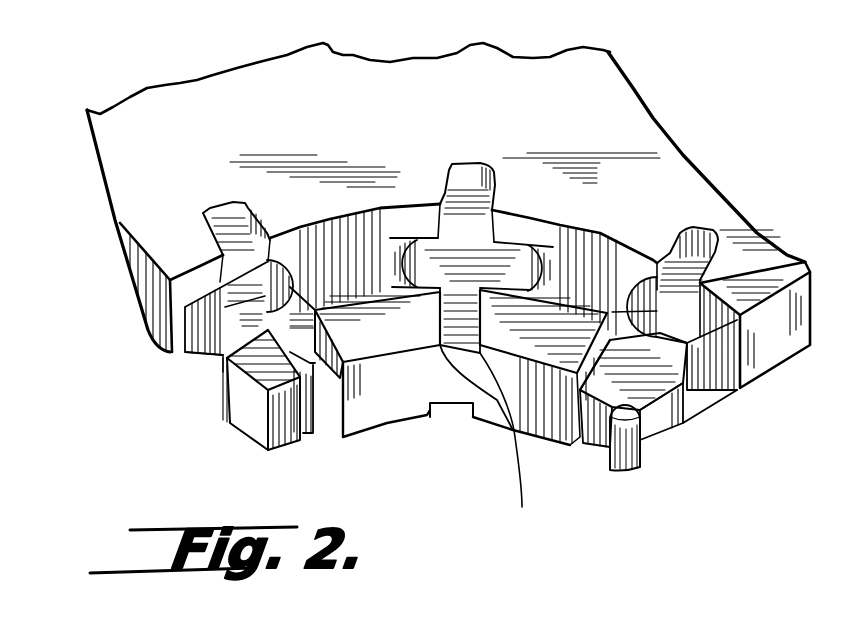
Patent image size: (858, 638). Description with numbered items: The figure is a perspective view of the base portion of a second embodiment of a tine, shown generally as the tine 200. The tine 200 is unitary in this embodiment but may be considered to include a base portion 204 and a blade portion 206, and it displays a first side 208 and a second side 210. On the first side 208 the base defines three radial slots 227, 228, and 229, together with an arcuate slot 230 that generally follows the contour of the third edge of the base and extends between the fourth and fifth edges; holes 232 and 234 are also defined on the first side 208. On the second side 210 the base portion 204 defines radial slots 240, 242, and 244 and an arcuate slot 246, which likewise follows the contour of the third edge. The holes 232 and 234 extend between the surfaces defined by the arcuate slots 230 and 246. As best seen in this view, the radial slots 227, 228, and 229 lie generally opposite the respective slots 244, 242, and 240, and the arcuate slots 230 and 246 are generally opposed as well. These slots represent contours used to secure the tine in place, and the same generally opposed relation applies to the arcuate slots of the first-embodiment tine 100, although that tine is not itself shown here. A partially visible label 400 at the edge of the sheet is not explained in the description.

The tine 200 is at (742, 203).
The base portion 204 is at (537, 446).
The blade portion 206 is at (660, 110).
The first side 208 is at (407, 421).
The second side 210 is at (405, 143).
The radial slot 227 is at (610, 390).
The radial slot 228 is at (475, 350).
The radial slot 229 is at (327, 377).
The arcuate slot 230 is at (688, 343).
The hole 232 is at (717, 347).
The hole 234 is at (245, 292).
The radial slot 240 is at (303, 433).
The radial slot 242 is at (455, 419).
The radial slot 244 is at (580, 443).
The arcuate slot 246 is at (228, 353).
The adjacent segment 400 is at (844, 435).
The tine 100 is at (183, 631).